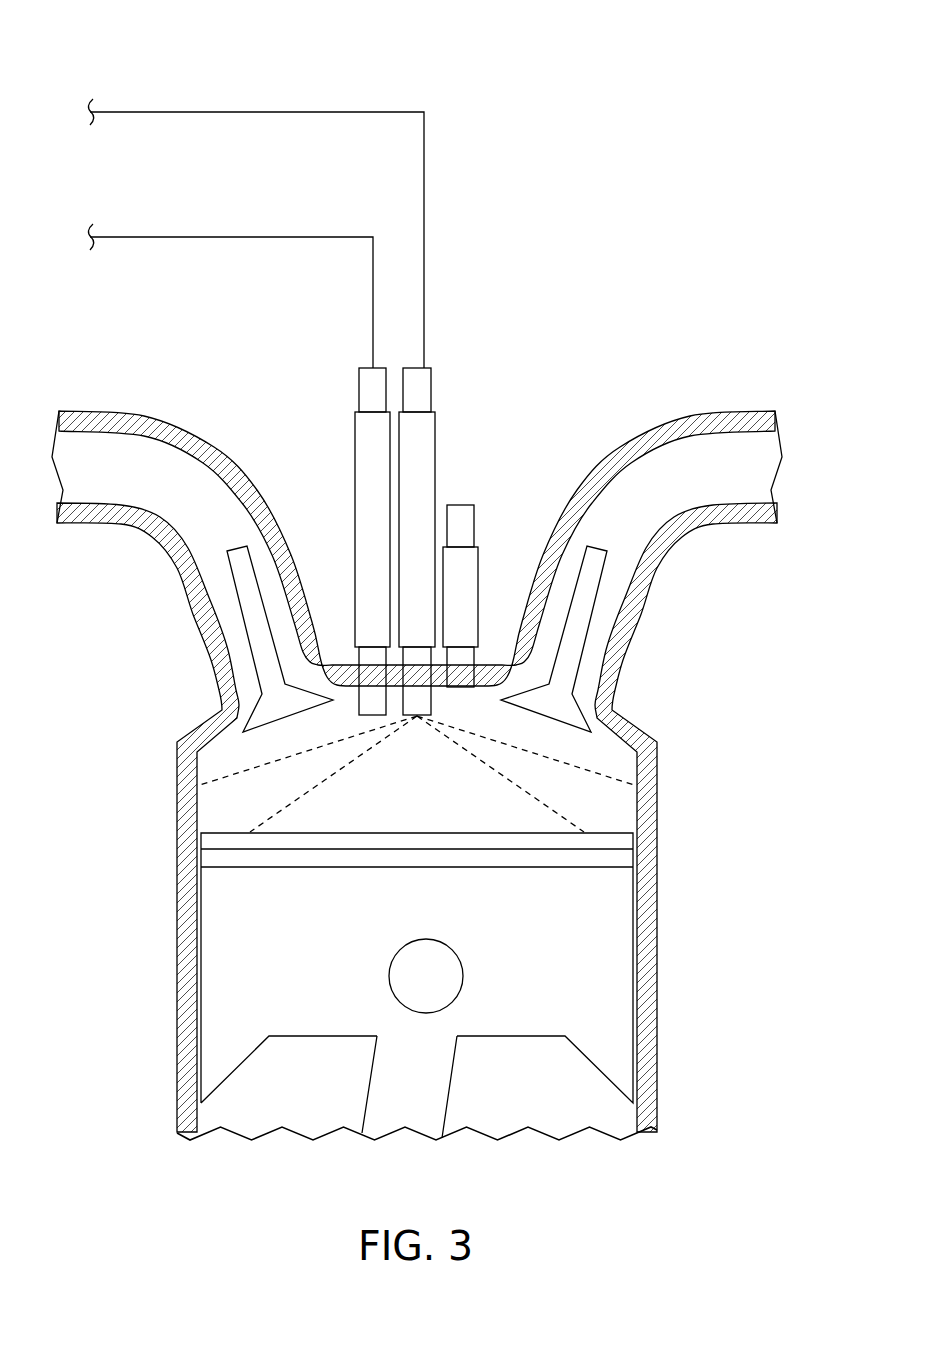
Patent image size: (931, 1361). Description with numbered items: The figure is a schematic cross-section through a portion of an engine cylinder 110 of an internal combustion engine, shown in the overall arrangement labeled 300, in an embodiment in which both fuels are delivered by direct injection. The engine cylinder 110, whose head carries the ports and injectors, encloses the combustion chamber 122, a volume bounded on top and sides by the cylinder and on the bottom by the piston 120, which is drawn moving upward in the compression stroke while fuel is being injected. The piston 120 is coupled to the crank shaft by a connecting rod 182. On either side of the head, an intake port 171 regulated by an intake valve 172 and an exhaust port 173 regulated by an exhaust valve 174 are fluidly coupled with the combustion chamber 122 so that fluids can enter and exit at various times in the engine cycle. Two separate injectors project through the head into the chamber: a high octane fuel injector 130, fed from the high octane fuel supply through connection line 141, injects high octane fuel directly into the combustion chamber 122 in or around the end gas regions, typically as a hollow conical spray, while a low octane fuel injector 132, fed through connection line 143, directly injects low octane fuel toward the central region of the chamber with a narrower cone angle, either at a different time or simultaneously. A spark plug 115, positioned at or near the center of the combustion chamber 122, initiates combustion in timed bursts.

The engine cylinder 110 is at (660, 788).
The spark plug 115 is at (474, 505).
The piston 120 is at (413, 833).
The combustion chamber 122 is at (441, 766).
The high octane fuel injector 130 is at (435, 428).
The low octane fuel injector 132 is at (355, 428).
The connection line 141 is at (258, 112).
The connection line 143 is at (263, 237).
The intake port 171 is at (194, 615).
The intake valve 172 is at (238, 712).
The exhaust port 173 is at (640, 617).
The exhaust valve 174 is at (593, 713).
The connecting rod 182 is at (367, 1090).
The engine cylinder system 300 is at (737, 223).